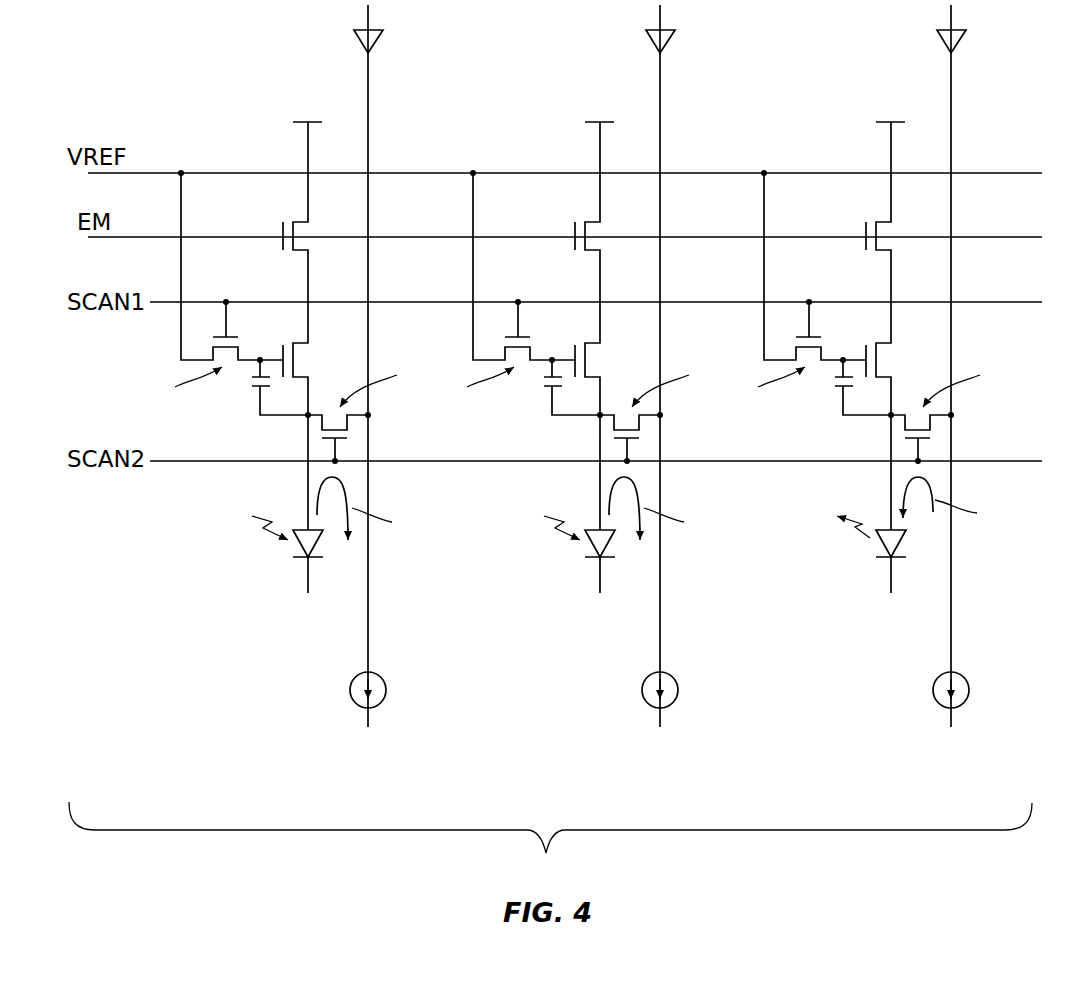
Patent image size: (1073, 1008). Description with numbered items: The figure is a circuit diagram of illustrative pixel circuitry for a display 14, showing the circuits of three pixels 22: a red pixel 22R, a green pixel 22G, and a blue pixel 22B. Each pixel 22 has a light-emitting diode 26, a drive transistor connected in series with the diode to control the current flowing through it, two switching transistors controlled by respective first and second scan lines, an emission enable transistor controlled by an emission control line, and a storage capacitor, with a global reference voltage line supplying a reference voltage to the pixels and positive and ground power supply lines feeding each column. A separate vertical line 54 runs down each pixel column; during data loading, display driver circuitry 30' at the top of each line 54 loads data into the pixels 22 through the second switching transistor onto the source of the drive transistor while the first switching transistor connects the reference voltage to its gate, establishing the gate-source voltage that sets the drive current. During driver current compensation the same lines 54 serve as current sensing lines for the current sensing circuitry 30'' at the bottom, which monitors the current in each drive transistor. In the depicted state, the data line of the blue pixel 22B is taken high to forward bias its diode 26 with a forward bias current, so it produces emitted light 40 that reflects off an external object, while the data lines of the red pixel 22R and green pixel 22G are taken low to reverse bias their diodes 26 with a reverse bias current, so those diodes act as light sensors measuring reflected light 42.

The display 14 is at (550, 839).
The pixel 22 is at (301, 450).
The red pixel 22R is at (290, 652).
The green pixel 22G is at (582, 652).
The blue pixel 22B is at (873, 652).
The light-emitting diode 26 is at (283, 550).
The display driver circuitry 30' is at (687, 47).
The current sensing circuitry 30'' is at (691, 692).
The emitted light 40 is at (831, 533).
The reflected light 42 is at (258, 527).
The vertical line 54 is at (370, 613).